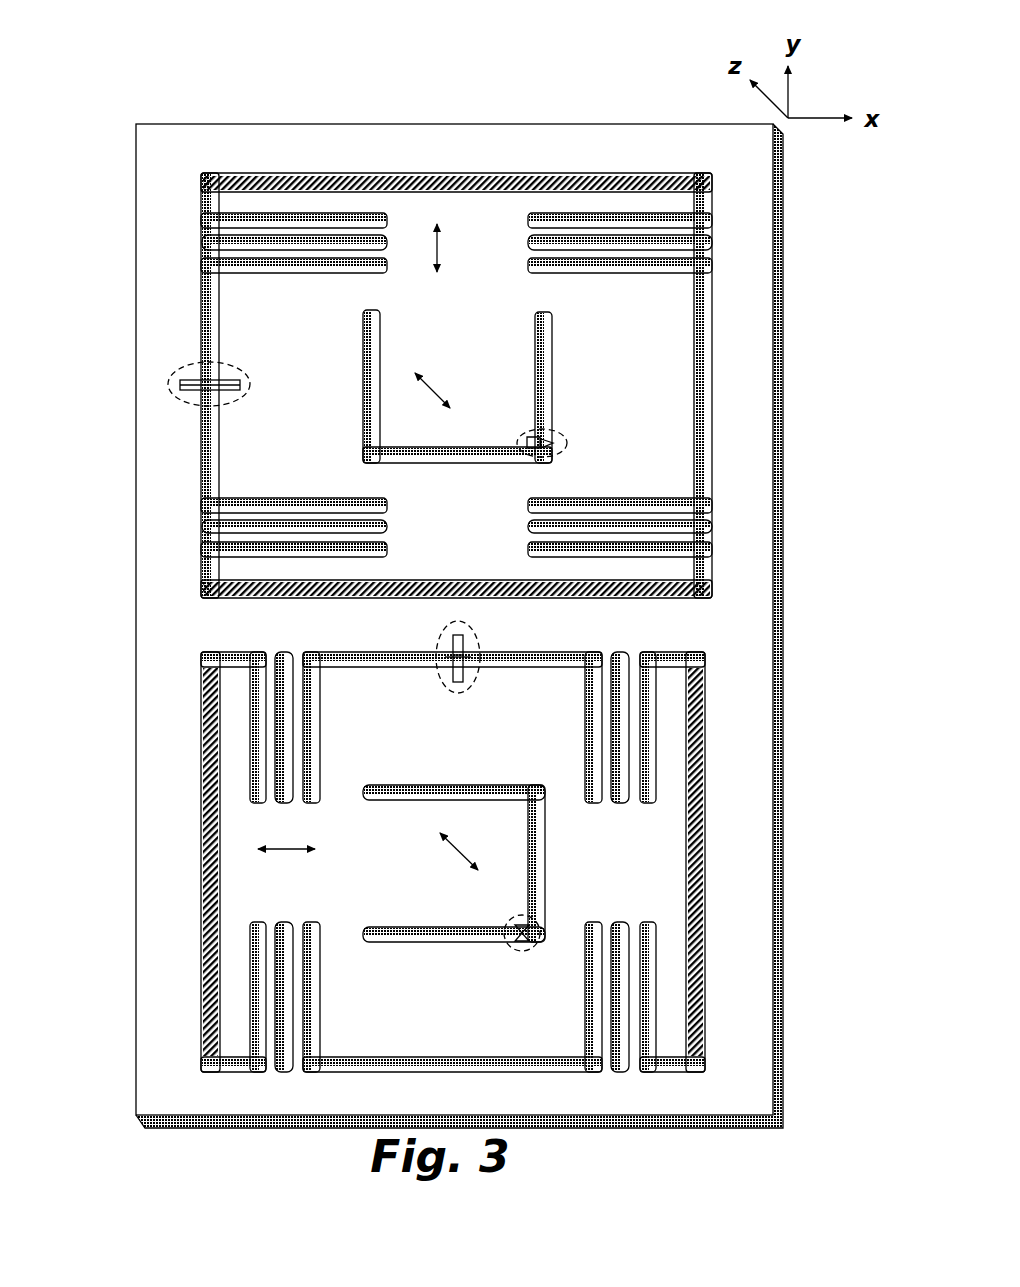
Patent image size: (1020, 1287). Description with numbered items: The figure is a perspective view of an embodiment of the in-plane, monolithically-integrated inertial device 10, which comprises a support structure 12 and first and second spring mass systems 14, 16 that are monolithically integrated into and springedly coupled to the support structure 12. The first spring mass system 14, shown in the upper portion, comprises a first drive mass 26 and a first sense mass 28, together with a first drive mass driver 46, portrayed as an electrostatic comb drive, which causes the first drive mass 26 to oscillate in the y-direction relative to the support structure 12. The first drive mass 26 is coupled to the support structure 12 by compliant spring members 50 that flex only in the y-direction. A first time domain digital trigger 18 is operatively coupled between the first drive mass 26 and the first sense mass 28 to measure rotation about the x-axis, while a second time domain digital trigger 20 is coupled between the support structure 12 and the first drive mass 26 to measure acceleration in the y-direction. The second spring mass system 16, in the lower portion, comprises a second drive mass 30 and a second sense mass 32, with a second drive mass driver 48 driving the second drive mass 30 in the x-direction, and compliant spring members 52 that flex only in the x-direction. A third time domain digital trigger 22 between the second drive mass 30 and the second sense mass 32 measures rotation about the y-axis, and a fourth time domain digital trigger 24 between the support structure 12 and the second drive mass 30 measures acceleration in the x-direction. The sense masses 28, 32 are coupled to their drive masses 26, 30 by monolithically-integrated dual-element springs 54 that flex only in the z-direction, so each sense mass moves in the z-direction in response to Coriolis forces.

The inertial device 10 is at (202, 85).
The support structure 12 is at (400, 124).
The first spring mass system 14 is at (107, 160).
The second spring mass system 16 is at (115, 633).
The first time domain digital trigger 18 is at (562, 436).
The second time domain digital trigger 20 is at (245, 376).
The third time domain digital trigger 22 is at (520, 953).
The fourth time domain digital trigger 24 is at (447, 680).
The first drive mass 26 is at (448, 254).
The first sense mass 28 is at (449, 394).
The second drive mass 30 is at (271, 881).
The second sense mass 32 is at (433, 885).
The first drive mass driver 46 is at (512, 173).
The second drive mass driver 48 is at (201, 822).
The compliant spring members 50 is at (200, 233).
The compliant spring members 52 is at (272, 650).
The dual-element springs 54 is at (546, 339).